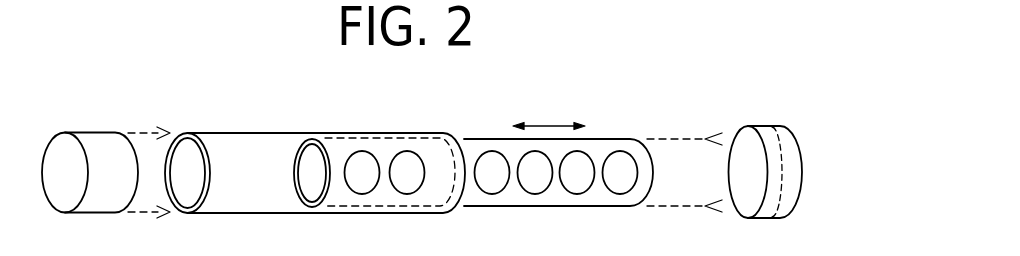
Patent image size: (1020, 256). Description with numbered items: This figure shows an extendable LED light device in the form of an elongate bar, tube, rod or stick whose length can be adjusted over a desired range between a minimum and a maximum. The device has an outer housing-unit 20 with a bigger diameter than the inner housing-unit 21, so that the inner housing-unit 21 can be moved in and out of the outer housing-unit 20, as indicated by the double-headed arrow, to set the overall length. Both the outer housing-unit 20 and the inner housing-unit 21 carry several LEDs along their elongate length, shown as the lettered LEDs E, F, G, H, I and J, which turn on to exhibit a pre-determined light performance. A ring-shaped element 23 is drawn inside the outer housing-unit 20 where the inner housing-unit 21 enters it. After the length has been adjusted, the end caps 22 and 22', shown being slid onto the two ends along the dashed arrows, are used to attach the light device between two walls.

The outer housing-unit 20 is at (240, 132).
The inner housing-unit 21 is at (610, 138).
The end cap 22 is at (90, 141).
The end cap 22' is at (766, 137).
The ring 23 is at (421, 150).